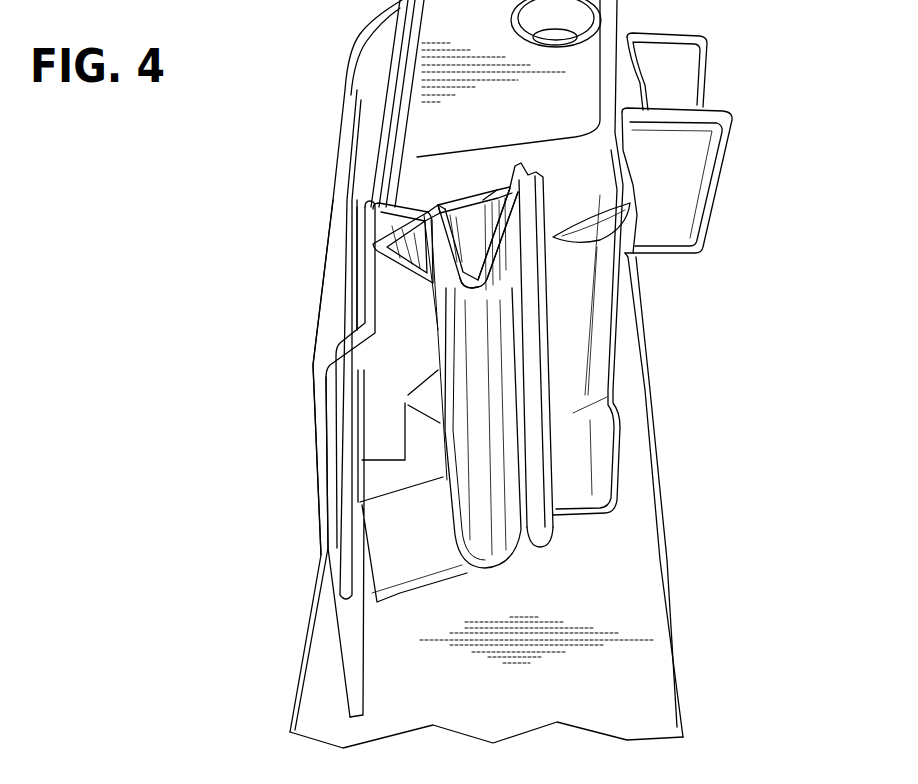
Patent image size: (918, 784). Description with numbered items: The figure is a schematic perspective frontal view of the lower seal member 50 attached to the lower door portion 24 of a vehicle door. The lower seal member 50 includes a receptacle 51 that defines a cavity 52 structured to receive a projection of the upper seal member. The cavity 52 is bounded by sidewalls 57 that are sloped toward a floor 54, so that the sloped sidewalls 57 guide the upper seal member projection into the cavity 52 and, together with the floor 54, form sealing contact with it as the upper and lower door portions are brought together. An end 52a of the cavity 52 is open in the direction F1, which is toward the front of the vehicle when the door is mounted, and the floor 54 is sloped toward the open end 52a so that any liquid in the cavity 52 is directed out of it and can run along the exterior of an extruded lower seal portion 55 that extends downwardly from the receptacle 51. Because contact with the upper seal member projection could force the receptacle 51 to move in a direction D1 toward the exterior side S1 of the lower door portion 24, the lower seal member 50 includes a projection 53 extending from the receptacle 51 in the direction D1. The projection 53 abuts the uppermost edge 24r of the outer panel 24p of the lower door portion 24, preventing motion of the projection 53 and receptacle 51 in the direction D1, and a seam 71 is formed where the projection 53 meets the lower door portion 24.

The lower door portion 24 is at (613, 523).
The outer panel 24p is at (317, 477).
The uppermost edge 24r is at (367, 308).
The exterior side S1 is at (312, 417).
The seam 71 is at (380, 248).
The projection 53 is at (403, 208).
The floor 54 is at (465, 235).
The sidewalls 57 is at (445, 208).
The receptacle 51 is at (542, 199).
The cavity 52 is at (478, 253).
The open end 52a is at (443, 282).
The extruded lower seal portion 55 is at (487, 500).
The lower seal member 50 is at (522, 231).
The direction toward front of vehicle F1 is at (483, 440).
The direction toward exterior side D1 is at (698, 278).